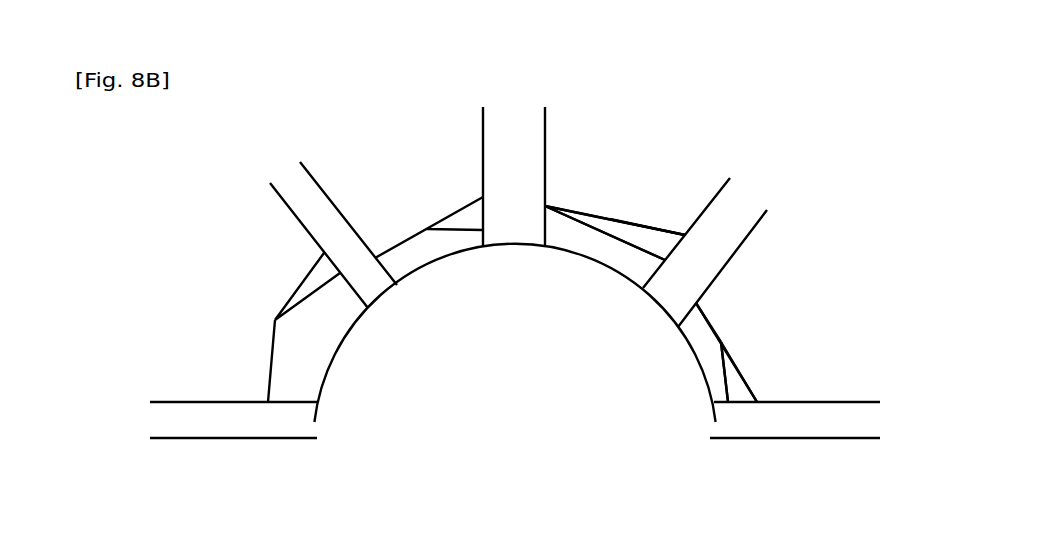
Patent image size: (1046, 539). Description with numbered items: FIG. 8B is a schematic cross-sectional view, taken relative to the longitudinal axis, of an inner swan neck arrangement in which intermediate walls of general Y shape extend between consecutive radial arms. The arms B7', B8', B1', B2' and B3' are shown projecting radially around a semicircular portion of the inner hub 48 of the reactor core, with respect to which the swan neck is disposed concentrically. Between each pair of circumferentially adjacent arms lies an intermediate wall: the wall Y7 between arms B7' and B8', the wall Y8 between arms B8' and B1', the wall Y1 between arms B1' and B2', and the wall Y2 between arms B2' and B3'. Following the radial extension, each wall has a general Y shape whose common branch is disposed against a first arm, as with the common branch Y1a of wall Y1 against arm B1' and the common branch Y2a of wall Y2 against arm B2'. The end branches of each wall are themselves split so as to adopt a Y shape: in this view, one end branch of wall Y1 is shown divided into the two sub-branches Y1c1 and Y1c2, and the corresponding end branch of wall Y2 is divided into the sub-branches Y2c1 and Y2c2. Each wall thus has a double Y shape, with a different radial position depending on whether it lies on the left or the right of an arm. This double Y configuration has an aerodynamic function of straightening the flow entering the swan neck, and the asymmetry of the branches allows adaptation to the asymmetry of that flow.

The inner hub 48 is at (322, 382).
The first arm B1' is at (544, 157).
The second arm B2' is at (754, 252).
The third arm B3' is at (817, 449).
The seventh arm B7' is at (201, 394).
The eighth arm B8' is at (333, 205).
The intermediate wall Y1 is at (631, 205).
The common branch Y1a is at (567, 211).
The first sub-branch Y1c1 is at (672, 232).
The second sub-branch Y1c2 is at (628, 245).
The intermediate wall Y2 is at (753, 342).
The common branch Y2a is at (715, 314).
The first sub-branch Y2c1 is at (750, 387).
The second sub-branch Y2c2 is at (724, 378).
The intermediate wall Y7 is at (256, 332).
The intermediate wall Y8 is at (416, 220).